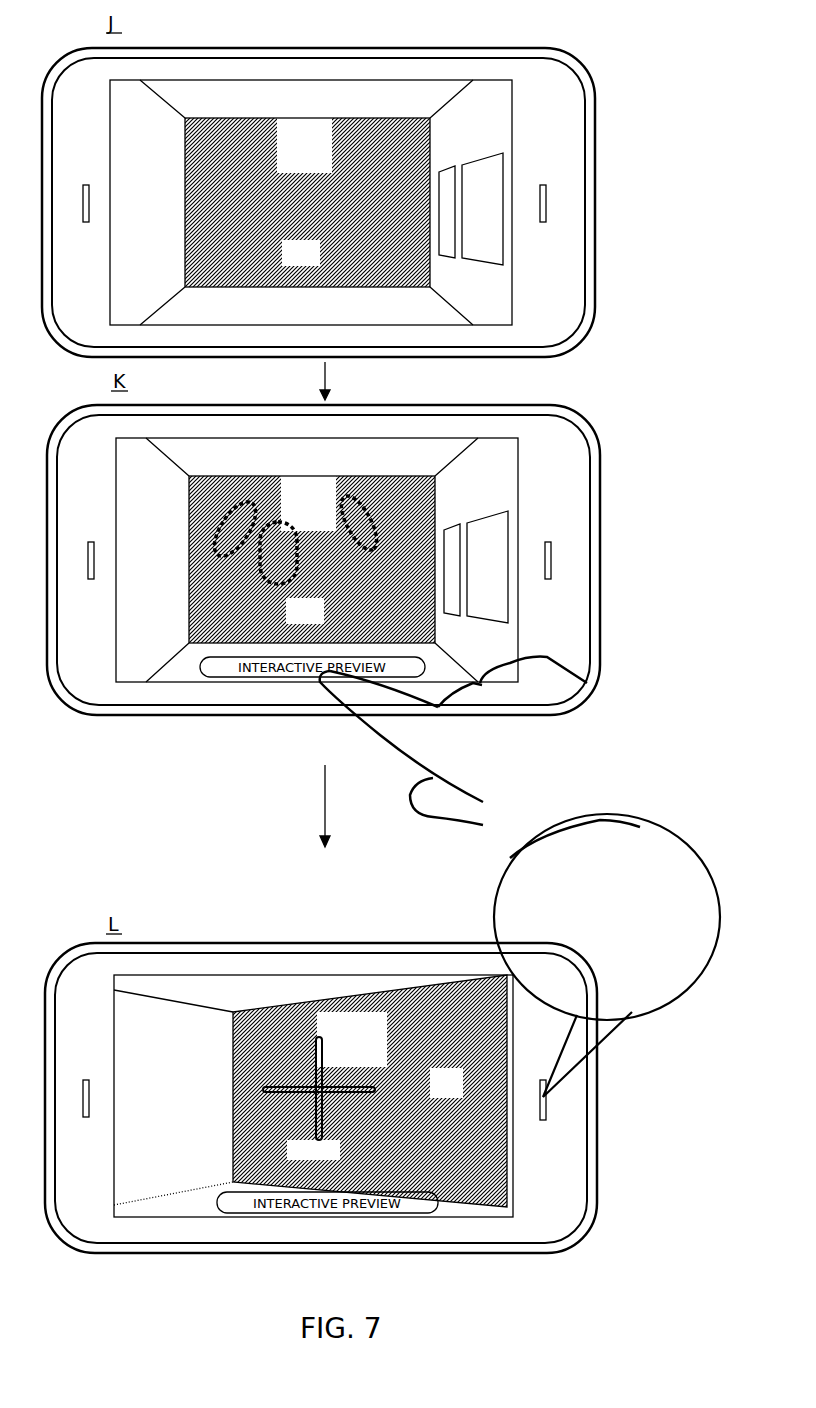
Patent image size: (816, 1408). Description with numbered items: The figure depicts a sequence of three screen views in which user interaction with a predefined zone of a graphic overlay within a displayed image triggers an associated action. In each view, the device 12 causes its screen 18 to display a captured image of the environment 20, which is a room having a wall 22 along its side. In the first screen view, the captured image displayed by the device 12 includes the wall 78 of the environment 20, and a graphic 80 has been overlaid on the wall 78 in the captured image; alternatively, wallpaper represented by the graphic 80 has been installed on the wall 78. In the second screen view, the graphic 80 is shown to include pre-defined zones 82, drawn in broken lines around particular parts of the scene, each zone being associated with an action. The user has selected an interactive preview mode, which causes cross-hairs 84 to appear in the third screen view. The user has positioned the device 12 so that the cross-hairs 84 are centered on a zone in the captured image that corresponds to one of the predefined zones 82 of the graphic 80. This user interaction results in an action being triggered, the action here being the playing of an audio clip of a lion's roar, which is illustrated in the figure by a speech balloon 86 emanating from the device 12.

The device 12 is at (168, 46).
The screen 18 is at (114, 327).
The environment 20 is at (457, 80).
The wall 22 is at (503, 127).
The wall 78 is at (297, 130).
The graphic 80 is at (197, 230).
The pre-defined zones 82 is at (348, 528).
The cross-hairs 84 is at (320, 1040).
The speech bubble sound effect 86 is at (641, 830).